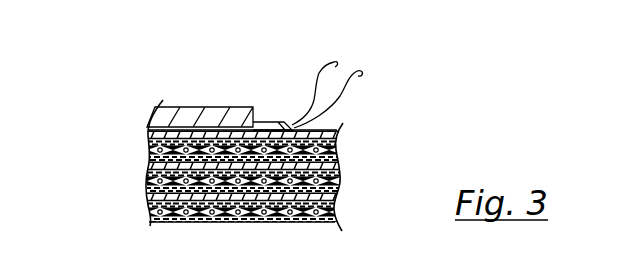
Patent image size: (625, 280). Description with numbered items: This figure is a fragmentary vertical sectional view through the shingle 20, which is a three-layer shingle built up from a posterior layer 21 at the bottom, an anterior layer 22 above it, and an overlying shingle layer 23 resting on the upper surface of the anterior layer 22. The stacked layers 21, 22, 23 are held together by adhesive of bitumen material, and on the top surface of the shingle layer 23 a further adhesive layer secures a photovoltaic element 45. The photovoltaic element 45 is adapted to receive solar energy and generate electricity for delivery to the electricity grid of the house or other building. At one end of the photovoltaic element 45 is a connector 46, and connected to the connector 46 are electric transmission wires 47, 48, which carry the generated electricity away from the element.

The shingle 20 is at (236, 122).
The posterior layer 21 is at (336, 208).
The anterior layer 22 is at (337, 177).
The overlying shingle layer 23 is at (336, 147).
The photovoltaic element 45 is at (190, 112).
The connector 46 is at (273, 122).
The electric transmission wire 47 is at (316, 70).
The electric transmission wire 48 is at (343, 82).